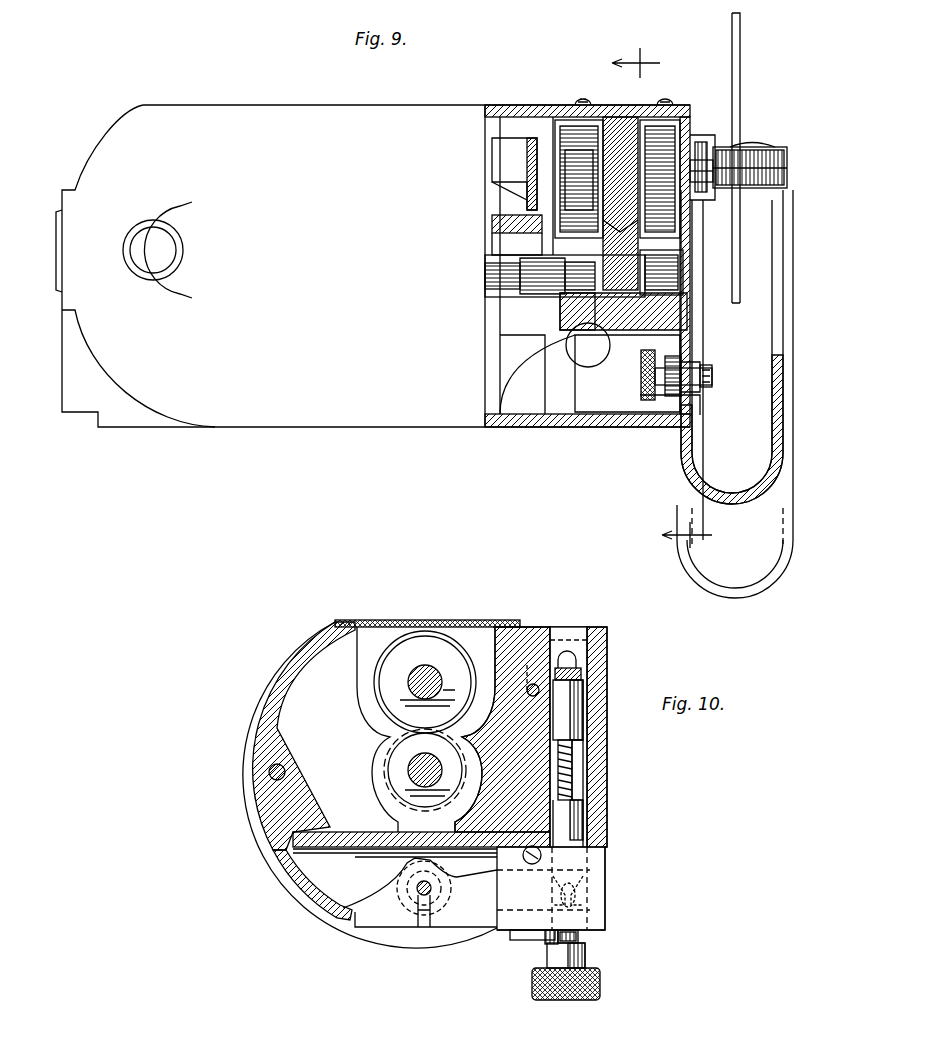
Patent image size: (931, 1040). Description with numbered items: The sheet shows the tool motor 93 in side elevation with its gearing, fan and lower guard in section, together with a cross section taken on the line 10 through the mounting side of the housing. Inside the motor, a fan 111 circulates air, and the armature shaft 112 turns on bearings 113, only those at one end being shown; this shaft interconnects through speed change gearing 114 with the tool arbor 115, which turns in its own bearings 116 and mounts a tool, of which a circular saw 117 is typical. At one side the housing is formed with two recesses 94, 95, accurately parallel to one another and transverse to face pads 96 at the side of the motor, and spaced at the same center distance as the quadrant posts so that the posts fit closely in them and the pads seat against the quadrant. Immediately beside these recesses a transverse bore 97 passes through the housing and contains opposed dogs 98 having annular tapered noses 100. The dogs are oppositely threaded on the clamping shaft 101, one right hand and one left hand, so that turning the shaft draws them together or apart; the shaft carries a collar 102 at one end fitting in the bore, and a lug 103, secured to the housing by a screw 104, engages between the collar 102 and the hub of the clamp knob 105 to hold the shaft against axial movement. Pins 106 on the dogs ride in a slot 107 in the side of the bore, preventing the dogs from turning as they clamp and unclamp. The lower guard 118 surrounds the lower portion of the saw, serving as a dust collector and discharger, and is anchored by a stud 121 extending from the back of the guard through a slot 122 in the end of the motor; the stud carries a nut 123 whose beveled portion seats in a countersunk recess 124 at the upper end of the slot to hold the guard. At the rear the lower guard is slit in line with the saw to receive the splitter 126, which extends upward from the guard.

In FIG. 9, the section line 10 is at (675, 298).
In FIG. 9, the tool motor 93 is at (373, 266).
In FIG. 10, the tool motor 93 is at (258, 740).
In FIG. 10, the recess 94 is at (590, 640).
In FIG. 9, the recess 95 is at (583, 355).
In FIG. 10, the recess 95 is at (590, 912).
In FIG. 10, the face pads 96 is at (633, 858).
In FIG. 10, the transverse bore 97 is at (563, 630).
In FIG. 10, the dogs 98 is at (628, 812).
In FIG. 10, the tapered noses 100 is at (580, 672).
In FIG. 10, the clamping shaft 101 is at (575, 770).
In FIG. 10, the collar 102 is at (580, 940).
In FIG. 10, the lug 103 is at (540, 941).
In FIG. 10, the screw 104 is at (545, 940).
In FIG. 10, the clamp knob 105 is at (586, 958).
In FIG. 10, the pins 106 is at (630, 836).
In FIG. 10, the slot 107 is at (570, 760).
In FIG. 9, the fan 111 is at (503, 150).
In FIG. 9, the armature shaft 112 is at (550, 285).
In FIG. 10, the armature shaft 112 is at (412, 767).
In FIG. 9, the bearings 113 is at (586, 300).
In FIG. 9, the speed change gearing 114 is at (614, 125).
In FIG. 9, the tool arbor 115 is at (728, 155).
In FIG. 10, the tool arbor 115 is at (425, 665).
In FIG. 9, the bearings 116 is at (683, 137).
In FIG. 9, the circular saw 117 is at (690, 213).
In FIG. 9, the lower guard 118 is at (770, 510).
In FIG. 9, the stud 121 is at (712, 376).
In FIG. 10, the stud 121 is at (432, 888).
In FIG. 10, the slot 122 is at (425, 900).
In FIG. 9, the nut 123 is at (648, 400).
In FIG. 10, the nut 123 is at (400, 890).
In FIG. 9, the countersunk recess 124 is at (685, 400).
In FIG. 9, the splitter 126 is at (745, 70).